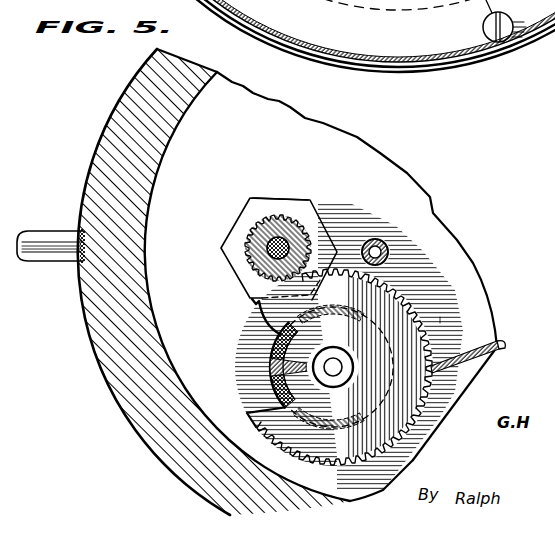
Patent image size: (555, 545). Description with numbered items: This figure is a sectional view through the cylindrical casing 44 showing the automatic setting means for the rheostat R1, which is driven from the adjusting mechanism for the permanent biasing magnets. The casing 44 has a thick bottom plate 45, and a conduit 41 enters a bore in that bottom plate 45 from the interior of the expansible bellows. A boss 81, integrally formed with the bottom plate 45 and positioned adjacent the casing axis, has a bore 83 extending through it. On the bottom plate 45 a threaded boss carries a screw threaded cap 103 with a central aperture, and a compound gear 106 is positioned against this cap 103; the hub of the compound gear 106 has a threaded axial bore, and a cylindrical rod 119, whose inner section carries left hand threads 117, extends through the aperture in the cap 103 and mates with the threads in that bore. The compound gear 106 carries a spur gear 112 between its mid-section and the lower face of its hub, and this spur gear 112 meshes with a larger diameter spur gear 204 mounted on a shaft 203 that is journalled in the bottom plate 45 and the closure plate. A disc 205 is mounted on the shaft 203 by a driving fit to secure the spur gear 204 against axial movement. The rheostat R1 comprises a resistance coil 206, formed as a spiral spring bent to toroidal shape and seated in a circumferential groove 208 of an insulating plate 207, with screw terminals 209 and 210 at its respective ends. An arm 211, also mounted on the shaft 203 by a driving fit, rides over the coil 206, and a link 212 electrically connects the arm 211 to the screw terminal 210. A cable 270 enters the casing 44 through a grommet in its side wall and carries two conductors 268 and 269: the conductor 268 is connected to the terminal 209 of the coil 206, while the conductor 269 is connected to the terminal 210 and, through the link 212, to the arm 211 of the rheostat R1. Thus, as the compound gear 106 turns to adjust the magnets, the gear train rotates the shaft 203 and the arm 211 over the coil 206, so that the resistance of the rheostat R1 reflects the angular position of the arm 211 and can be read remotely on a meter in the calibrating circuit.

The cylindrical casing 44 is at (115, 137).
The conduit 41 is at (42, 241).
The bottom plate 45 is at (393, 183).
The left hand threads 117 is at (252, 199).
The screw threaded cap 103 is at (278, 203).
The compound gear 106 is at (300, 222).
The spur gear 112 is at (255, 232).
The cylindrical rod 119 is at (270, 255).
The boss 81 is at (374, 242).
The bore 83 is at (384, 250).
The spur gear 204 is at (390, 288).
The screw terminal 209 is at (365, 343).
The disc 205 is at (322, 352).
The shaft 203 is at (334, 366).
The resistance coil 206 is at (285, 340).
The arm 211 is at (283, 364).
The insulating plate 207 is at (296, 378).
The circumferential groove 208 is at (288, 393).
The link 212 is at (323, 421).
The screw terminal 210 is at (326, 425).
The conductor 268 is at (441, 320).
The cable 270 is at (498, 355).
The conductor 269 is at (437, 417).
The rheostat R1 is at (262, 333).